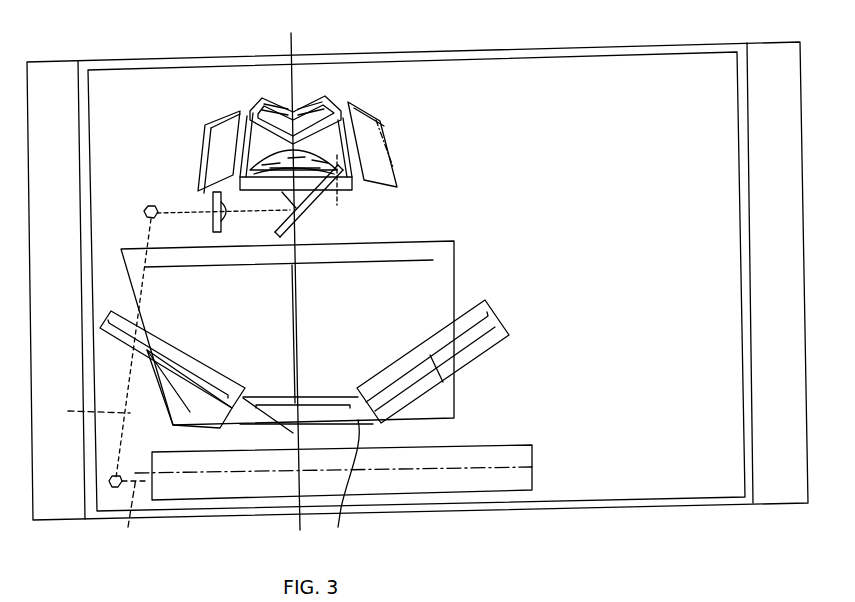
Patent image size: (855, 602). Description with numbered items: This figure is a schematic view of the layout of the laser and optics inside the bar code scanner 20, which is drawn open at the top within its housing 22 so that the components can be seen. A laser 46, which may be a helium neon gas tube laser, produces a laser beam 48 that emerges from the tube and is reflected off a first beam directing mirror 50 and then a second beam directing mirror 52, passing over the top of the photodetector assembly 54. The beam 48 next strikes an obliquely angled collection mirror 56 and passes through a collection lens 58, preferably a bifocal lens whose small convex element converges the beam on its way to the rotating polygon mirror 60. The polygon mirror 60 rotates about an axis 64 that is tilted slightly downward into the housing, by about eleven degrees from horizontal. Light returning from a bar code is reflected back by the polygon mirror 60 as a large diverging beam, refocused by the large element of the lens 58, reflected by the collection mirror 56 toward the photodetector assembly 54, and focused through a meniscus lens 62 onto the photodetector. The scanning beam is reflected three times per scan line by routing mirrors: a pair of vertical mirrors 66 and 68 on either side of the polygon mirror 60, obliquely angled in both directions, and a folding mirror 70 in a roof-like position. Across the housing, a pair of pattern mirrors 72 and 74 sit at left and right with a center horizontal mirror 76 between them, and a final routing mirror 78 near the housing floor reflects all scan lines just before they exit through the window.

The bar code scanner 20 is at (471, 41).
The housing 22 is at (619, 514).
The laser 46 is at (502, 448).
The laser beam 48 is at (179, 210).
The first beam directing mirror 50 is at (109, 481).
The second beam directing mirror 52 is at (145, 208).
The photodetector assembly 54 is at (209, 230).
The collection mirror 56 is at (314, 193).
The collection lens 58 is at (326, 160).
The rotating polygon mirror 60 is at (309, 100).
The meniscus lens 62 is at (229, 213).
The axis 64 is at (296, 47).
The vertical mirror 66 is at (222, 118).
The vertical mirror 68 is at (400, 168).
The folding mirror 70 is at (346, 128).
The pattern mirror 72 is at (146, 354).
The pattern mirror 74 is at (473, 338).
The center horizontal mirror 76 is at (306, 469).
The final routing mirror 78 is at (413, 287).